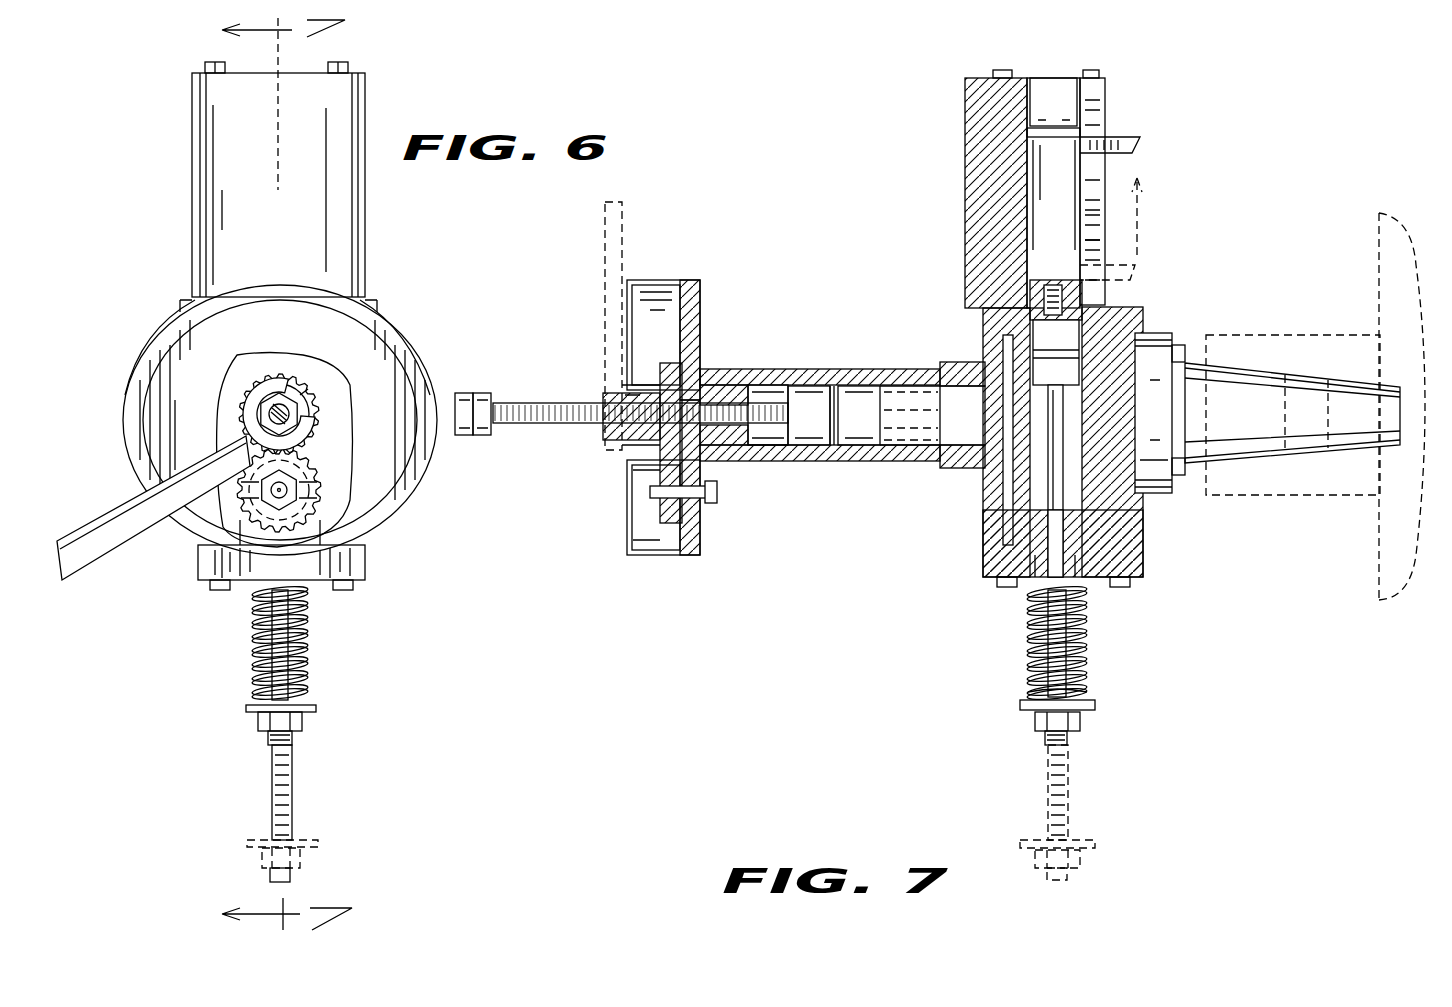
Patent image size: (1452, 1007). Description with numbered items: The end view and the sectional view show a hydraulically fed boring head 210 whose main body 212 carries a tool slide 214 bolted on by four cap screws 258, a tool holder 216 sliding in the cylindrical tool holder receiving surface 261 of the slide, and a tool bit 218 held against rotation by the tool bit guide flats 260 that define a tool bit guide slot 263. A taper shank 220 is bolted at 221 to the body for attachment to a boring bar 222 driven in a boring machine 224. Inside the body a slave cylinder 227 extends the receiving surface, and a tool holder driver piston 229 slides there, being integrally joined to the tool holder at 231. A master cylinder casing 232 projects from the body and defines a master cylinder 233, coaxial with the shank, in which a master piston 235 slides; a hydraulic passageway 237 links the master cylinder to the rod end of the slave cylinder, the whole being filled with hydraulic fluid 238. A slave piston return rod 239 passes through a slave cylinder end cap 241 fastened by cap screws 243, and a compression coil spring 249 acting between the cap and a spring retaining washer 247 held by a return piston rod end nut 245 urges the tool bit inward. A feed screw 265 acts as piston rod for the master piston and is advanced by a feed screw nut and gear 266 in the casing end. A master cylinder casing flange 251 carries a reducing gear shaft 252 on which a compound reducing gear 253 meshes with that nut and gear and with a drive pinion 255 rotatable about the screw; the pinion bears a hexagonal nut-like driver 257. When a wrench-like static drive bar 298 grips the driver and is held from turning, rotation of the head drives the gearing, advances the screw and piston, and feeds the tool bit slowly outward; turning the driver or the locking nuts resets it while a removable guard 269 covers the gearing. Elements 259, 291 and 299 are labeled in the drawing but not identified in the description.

In FIG. 6, the boring head 210 is at (416, 297).
In FIG. 7, the boring head 210 is at (936, 286).
In FIG. 6, the main body 212 is at (398, 340).
In FIG. 7, the main body 212 is at (1145, 312).
In FIG. 6, the tool slide 214 is at (367, 116).
In FIG. 7, the tool slide 214 is at (965, 118).
In FIG. 7, the tool holder 216 is at (1066, 196).
In FIG. 7, the tool bit 218 is at (1135, 146).
In FIG. 7, the taper shank 220 is at (1195, 385).
In FIG. 7, the bolt connection 221 is at (1178, 345).
In FIG. 7, the boring bar 222 is at (1312, 345).
In FIG. 7, the boring machine 224 is at (1380, 590).
In FIG. 7, the slave cylinder 227 is at (1145, 520).
In FIG. 7, the tool holder driver piston 229 is at (1075, 407).
In FIG. 7, the integral connection 231 is at (1035, 300).
In FIG. 7, the master cylinder casing 232 is at (705, 383).
In FIG. 7, the master cylinder 233 is at (905, 385).
In FIG. 7, the master piston 235 is at (865, 430).
In FIG. 7, the hydraulic passageway 237 is at (1005, 516).
In FIG. 7, the hydraulic fluid 238 is at (968, 434).
In FIG. 6, the slave piston return rod 239 is at (300, 672).
In FIG. 7, the slave piston return rod 239 is at (1090, 636).
In FIG. 6, the slave cylinder end cap 241 is at (350, 566).
In FIG. 6, the cap screws 243 is at (220, 592).
In FIG. 7, the cap screws 243 is at (1005, 588).
In FIG. 6, the return piston rod end nut 245 is at (260, 856).
In FIG. 7, the return piston rod end nut 245 is at (1072, 722).
In FIG. 6, the spring retaining washer 247 is at (314, 711).
In FIG. 7, the spring retaining washer 247 is at (1097, 706).
In FIG. 6, the compression coil spring 249 is at (300, 648).
In FIG. 6, the master cylinder casing flange 251 is at (247, 380).
In FIG. 7, the master cylinder casing flange 251 is at (700, 332).
In FIG. 7, the reducing gear shaft 252 is at (708, 505).
In FIG. 6, the compound reducing gear 253 is at (322, 507).
In FIG. 7, the compound reducing gear 253 is at (640, 508).
In FIG. 6, the drive pinion 255 is at (305, 390).
In FIG. 7, the drive pinion 255 is at (622, 395).
In FIG. 6, the nut-like driver 257 is at (284, 404).
In FIG. 7, the nut-like driver 257 is at (605, 400).
In FIG. 6, the cap screws 258 is at (210, 62).
In FIG. 7, the cap screws 258 is at (1002, 70).
In FIG. 7, the lock nuts 259 is at (470, 436).
In FIG. 7, the tool bit guide flats 260 is at (1105, 110).
In FIG. 7, the cylindrical tool holder receiving surface 261 is at (1046, 85).
In FIG. 7, the tool bit guide slot 263 is at (1097, 248).
In FIG. 7, the feed screw 265 is at (745, 462).
In FIG. 6, the feed screw nut and gear 266 is at (325, 405).
In FIG. 7, the feed screw nut and gear 266 is at (740, 390).
In FIG. 6, the removable guard 269 is at (180, 348).
In FIG. 7, the removable guard 269 is at (668, 282).
In FIG. 7, the bottom plate 291 is at (1135, 556).
In FIG. 6, the static drive bar 298 is at (102, 522).
In FIG. 7, the static drive bar 298 is at (624, 220).
In FIG. 7, the spring seat 299 is at (1037, 680).